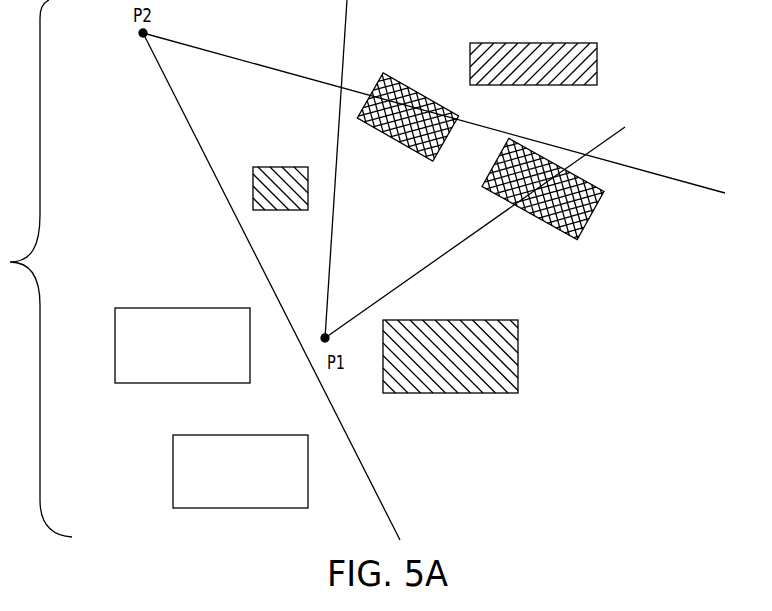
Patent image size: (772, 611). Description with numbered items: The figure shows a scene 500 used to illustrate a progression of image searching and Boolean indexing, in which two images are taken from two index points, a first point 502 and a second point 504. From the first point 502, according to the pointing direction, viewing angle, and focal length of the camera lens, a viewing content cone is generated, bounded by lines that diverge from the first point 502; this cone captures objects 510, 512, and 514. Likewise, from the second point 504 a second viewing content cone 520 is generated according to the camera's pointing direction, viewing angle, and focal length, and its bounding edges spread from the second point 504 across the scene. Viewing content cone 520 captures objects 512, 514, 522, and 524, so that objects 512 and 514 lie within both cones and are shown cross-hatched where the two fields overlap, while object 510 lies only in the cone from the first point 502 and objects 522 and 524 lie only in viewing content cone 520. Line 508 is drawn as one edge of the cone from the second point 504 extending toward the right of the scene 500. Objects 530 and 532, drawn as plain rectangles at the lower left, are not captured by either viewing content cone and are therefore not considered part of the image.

The scene 500 is at (598, 478).
The point P1 502 is at (320, 348).
The point P2 504 is at (137, 35).
The line through points 508 is at (619, 145).
The object 510 is at (597, 62).
The object 512 is at (420, 88).
The object 514 is at (593, 217).
The viewing content cone 520 is at (210, 165).
The object 522 is at (253, 187).
The object 524 is at (518, 353).
The object 530 is at (113, 345).
The object 532 is at (173, 470).